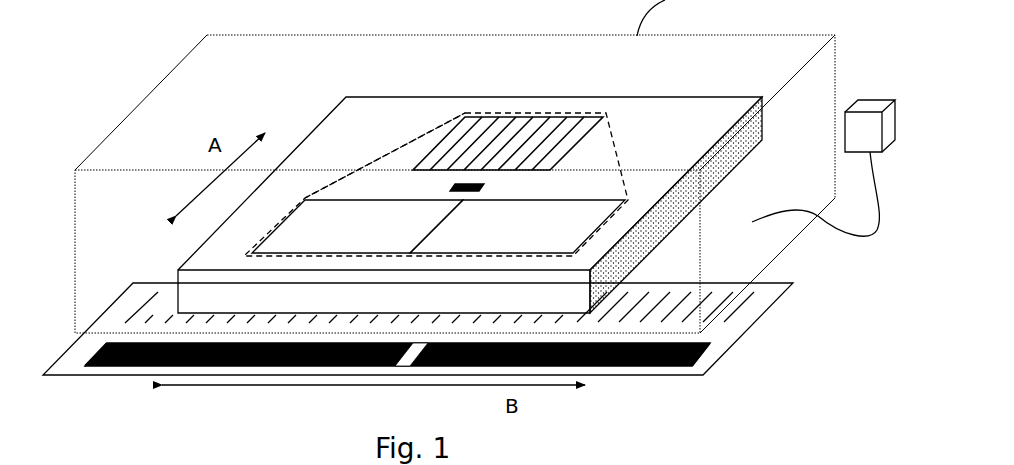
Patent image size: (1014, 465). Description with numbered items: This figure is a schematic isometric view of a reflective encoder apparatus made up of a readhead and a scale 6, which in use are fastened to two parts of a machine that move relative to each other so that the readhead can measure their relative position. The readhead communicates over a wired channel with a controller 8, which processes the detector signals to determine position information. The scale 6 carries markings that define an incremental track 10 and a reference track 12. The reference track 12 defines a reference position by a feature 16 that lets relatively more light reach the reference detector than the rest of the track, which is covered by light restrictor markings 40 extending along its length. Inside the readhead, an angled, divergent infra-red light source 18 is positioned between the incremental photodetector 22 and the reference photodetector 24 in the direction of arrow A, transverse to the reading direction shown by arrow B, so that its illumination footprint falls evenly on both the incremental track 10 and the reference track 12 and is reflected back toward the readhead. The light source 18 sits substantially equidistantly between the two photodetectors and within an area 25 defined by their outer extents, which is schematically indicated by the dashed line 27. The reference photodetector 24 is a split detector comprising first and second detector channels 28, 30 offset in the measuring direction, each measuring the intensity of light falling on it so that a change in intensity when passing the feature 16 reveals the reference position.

The scale 6 is at (72, 357).
The controller 8 is at (870, 141).
The incremental track 10 is at (745, 307).
The reference track 12 is at (714, 352).
The feature 16 is at (407, 357).
The light source 18 is at (485, 188).
The incremental photodetector 22 is at (587, 140).
The reference photodetector 24 is at (268, 228).
The area 25 is at (385, 157).
The dashed line 27 is at (618, 157).
The first detector channel 28 is at (357, 226).
The second detector channel 30 is at (517, 226).
The light restrictor markings 40 is at (120, 366).